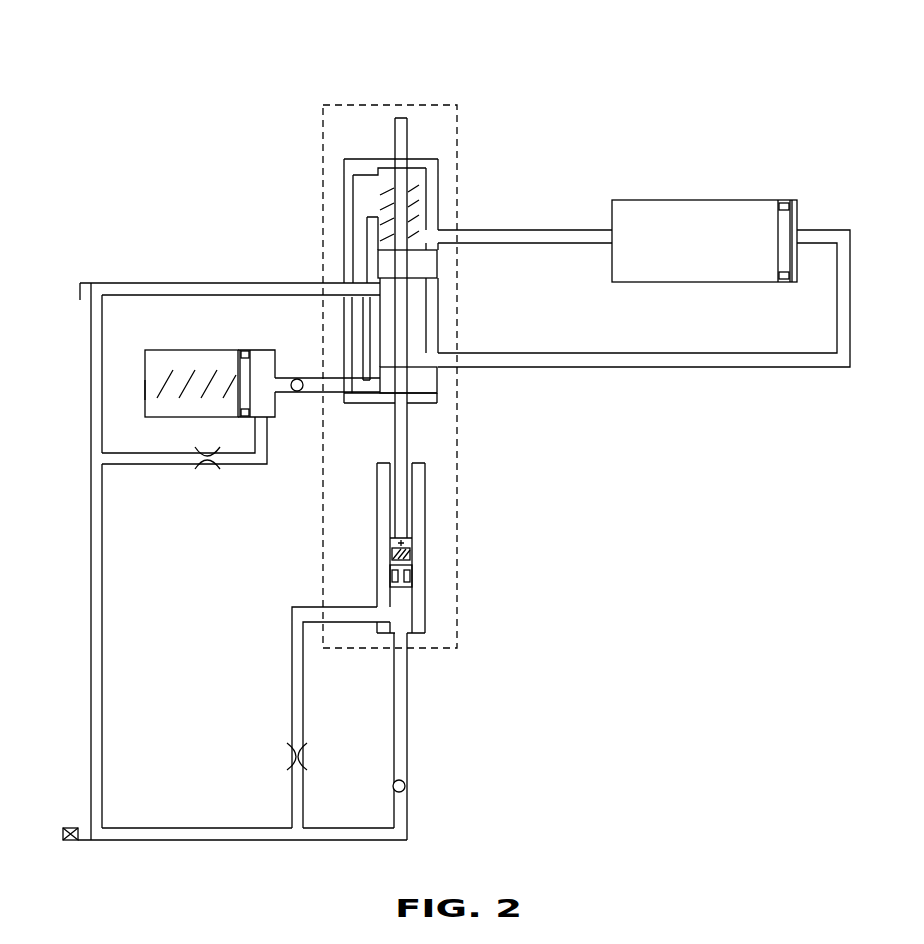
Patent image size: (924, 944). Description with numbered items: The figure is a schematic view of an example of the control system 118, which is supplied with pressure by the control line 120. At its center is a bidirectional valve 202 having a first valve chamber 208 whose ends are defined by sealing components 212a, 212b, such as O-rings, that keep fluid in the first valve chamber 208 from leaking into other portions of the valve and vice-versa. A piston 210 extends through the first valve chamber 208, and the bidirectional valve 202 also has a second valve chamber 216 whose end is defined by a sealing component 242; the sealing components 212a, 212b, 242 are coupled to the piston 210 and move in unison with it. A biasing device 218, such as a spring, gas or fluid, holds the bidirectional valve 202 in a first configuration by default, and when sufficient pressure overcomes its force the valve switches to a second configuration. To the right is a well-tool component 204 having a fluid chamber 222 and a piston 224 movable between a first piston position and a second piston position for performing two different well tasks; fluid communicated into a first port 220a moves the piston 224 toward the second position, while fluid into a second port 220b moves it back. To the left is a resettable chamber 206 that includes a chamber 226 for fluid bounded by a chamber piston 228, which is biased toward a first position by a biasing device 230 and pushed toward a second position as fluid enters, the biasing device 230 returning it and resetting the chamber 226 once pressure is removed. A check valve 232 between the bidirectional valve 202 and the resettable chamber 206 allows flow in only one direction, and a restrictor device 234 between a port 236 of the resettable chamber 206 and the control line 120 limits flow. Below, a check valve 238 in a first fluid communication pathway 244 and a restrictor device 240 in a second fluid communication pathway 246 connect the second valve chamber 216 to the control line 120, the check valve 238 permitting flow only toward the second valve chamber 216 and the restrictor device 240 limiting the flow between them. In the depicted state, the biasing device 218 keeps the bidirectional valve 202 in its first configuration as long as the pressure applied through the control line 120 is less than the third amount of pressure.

The control system 118 is at (200, 84).
The control line 120 is at (80, 283).
The bidirectional valve 202 is at (362, 103).
The well-tool component 204 is at (690, 200).
The resettable chamber 206 is at (157, 350).
The first valve chamber 208 is at (417, 343).
The piston 210 is at (400, 317).
The sealing component 212a is at (408, 383).
The sealing component 212b is at (410, 257).
The second valve chamber 216 is at (402, 615).
The biasing device 218 is at (410, 178).
The first port 220a is at (798, 238).
The second port 220b is at (605, 230).
The fluid chamber 222 is at (700, 273).
The piston 224 is at (785, 223).
The chamber 226 is at (260, 350).
The chamber piston 228 is at (240, 350).
The biasing device 230 is at (148, 393).
The check valve 232 is at (297, 372).
The restrictor device 234 is at (207, 467).
The port 236 is at (258, 418).
The check valve 238 is at (405, 785).
The restrictor device 240 is at (292, 757).
The sealing component 242 is at (411, 574).
The first fluid communication pathway 244 is at (407, 712).
The second fluid communication pathway 246 is at (292, 675).